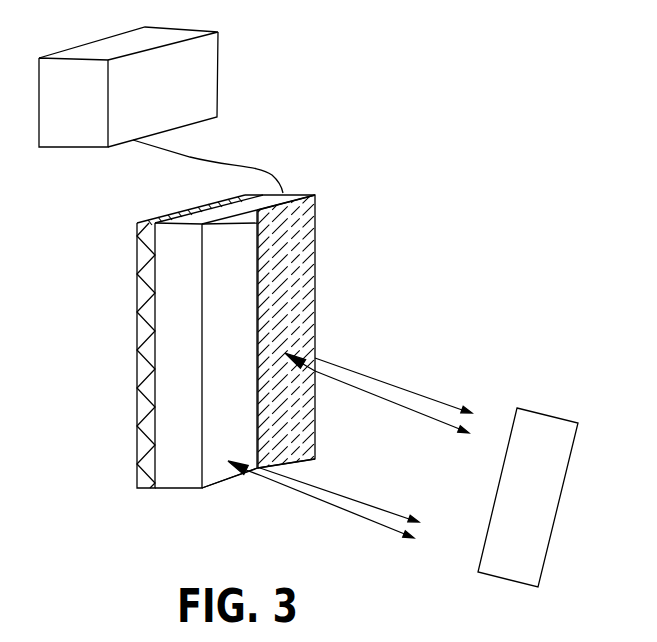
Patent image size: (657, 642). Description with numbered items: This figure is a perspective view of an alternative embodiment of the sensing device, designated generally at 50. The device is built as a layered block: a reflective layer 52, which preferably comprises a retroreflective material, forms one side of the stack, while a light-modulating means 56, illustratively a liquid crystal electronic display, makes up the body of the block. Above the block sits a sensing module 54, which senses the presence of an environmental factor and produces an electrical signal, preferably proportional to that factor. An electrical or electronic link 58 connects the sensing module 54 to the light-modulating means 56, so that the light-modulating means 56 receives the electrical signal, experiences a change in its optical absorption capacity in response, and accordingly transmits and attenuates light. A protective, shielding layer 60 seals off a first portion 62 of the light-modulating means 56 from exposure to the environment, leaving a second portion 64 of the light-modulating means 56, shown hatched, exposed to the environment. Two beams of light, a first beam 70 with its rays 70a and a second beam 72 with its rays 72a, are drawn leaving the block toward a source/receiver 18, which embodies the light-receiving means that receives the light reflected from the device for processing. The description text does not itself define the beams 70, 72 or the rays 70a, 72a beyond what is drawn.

The sensing device 50 is at (478, 95).
The sensing module 54 is at (237, 73).
The electrical or electronic link 58 is at (165, 171).
The light-modulating means 56 is at (313, 175).
The reflective layer 52 is at (110, 288).
The protective, shielding layer 60 is at (205, 488).
The first portion of the light-modulating means 62 is at (268, 436).
The second portion of the light-modulating means 64 is at (320, 259).
The output light beam 72 is at (395, 388).
The light rays of beam 72 72a is at (358, 372).
The output light beam 70 is at (360, 518).
The light rays of beam 70 70a is at (360, 503).
The source/receiver 18 is at (545, 422).